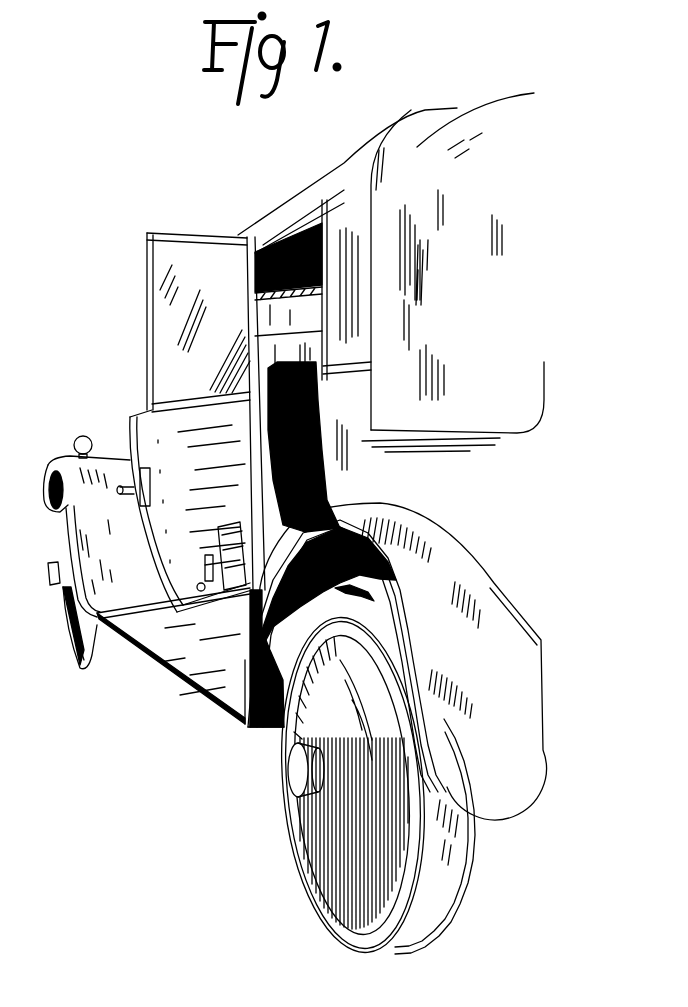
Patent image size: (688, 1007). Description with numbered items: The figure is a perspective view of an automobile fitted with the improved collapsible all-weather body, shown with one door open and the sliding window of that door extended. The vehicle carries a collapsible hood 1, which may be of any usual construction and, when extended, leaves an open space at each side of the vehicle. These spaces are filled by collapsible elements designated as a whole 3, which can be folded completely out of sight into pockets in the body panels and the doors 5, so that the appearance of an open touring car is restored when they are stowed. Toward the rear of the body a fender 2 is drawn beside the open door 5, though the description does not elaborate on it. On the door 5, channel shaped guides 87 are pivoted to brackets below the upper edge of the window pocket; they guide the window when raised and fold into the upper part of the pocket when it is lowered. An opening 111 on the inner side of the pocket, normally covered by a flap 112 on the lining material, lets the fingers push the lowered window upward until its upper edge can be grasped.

The collapsible hood 1 is at (472, 173).
The rear fender 2 is at (424, 480).
The collapsible side unit 3 is at (352, 243).
The door 5 is at (130, 462).
The channel shaped guide 87 is at (148, 300).
The opening 111 is at (235, 577).
The flap 112 is at (253, 585).